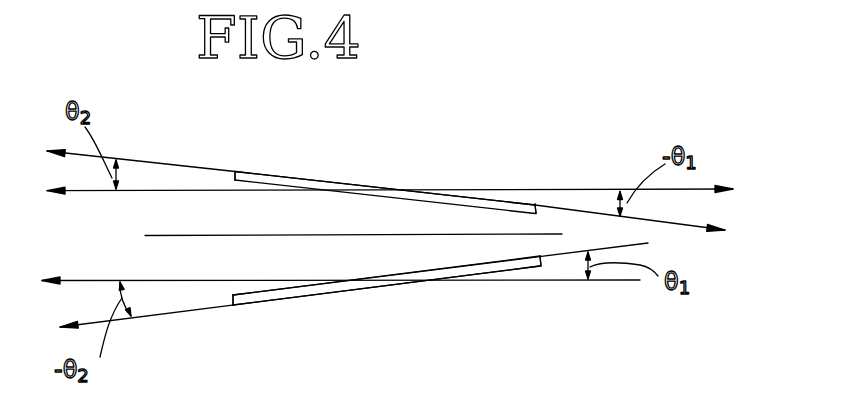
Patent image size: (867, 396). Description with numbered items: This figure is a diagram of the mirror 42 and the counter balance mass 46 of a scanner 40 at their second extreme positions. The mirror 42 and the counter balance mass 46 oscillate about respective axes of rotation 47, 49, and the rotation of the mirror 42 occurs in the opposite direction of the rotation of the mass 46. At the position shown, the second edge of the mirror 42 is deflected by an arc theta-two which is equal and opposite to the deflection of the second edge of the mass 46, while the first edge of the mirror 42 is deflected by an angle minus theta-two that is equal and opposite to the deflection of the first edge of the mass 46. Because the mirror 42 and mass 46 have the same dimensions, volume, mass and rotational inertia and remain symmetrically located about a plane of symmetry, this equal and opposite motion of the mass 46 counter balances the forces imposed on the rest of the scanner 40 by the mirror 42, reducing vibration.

The scanner 40 is at (661, 116).
The mirror 42 is at (313, 180).
The counter balance mass 46 is at (321, 295).
The axis of rotation 47 is at (387, 189).
The axis of rotation 49 is at (388, 278).